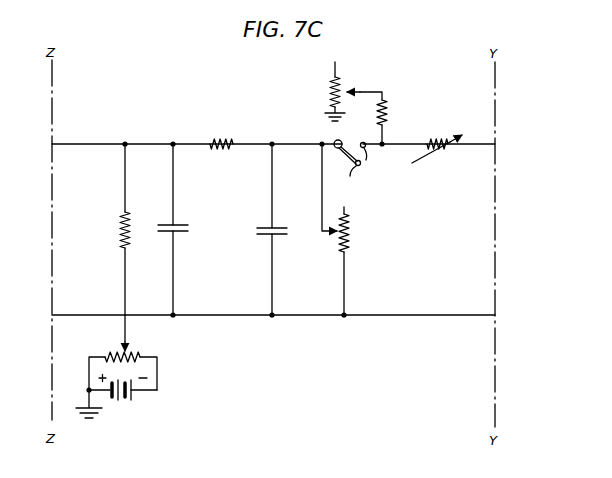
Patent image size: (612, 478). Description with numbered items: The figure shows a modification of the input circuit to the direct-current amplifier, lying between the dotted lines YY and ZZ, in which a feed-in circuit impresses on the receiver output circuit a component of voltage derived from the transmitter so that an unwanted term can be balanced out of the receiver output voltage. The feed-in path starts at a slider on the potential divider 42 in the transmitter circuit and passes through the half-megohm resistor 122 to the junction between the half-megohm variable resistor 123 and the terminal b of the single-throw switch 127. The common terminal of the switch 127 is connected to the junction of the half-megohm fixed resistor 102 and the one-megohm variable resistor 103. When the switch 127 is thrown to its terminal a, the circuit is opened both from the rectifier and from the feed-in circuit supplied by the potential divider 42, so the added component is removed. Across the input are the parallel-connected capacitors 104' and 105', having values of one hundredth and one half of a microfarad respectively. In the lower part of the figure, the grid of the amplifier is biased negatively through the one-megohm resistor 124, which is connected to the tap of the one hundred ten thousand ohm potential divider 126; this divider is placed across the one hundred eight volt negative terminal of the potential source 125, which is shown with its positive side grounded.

The potential divider 42 is at (329, 93).
The fixed resistor 102 is at (210, 147).
The variable resistor 103 is at (355, 240).
The capacitor 104' is at (254, 229).
The capacitor 105' is at (185, 229).
The resistor 122 is at (390, 110).
The variable resistor 123 is at (437, 161).
The resistor 124 is at (113, 233).
The potential source 125 is at (125, 402).
The potential divider 126 is at (130, 346).
The single-throw switch 127 is at (345, 140).